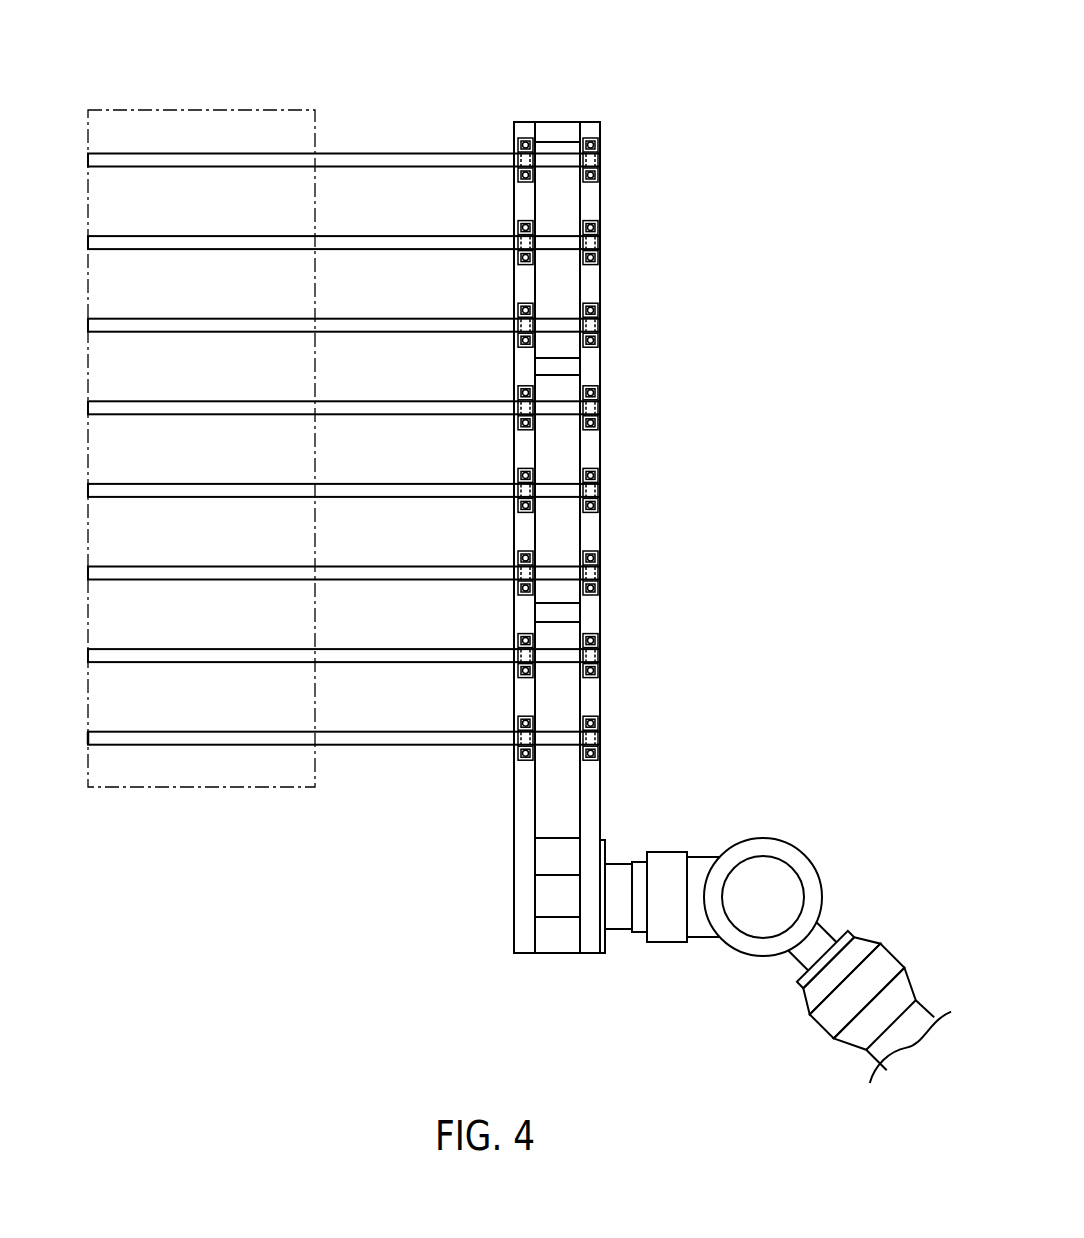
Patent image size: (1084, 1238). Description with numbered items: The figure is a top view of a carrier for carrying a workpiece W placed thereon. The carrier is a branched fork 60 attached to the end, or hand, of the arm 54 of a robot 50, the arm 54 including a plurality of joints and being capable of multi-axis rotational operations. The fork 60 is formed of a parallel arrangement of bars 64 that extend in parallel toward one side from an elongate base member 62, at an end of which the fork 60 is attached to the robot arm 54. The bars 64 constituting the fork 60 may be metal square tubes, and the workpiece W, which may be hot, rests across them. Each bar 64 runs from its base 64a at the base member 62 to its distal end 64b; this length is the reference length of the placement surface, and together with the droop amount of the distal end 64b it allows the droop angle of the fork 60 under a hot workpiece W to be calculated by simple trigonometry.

The workpiece W is at (282, 110).
The robot 50 is at (778, 986).
The arm 54 is at (827, 1020).
The fork 60 is at (396, 537).
The elongate base member 62 is at (600, 443).
The bar 64 is at (383, 737).
The base 64a is at (507, 738).
The distal end 64b is at (88, 734).